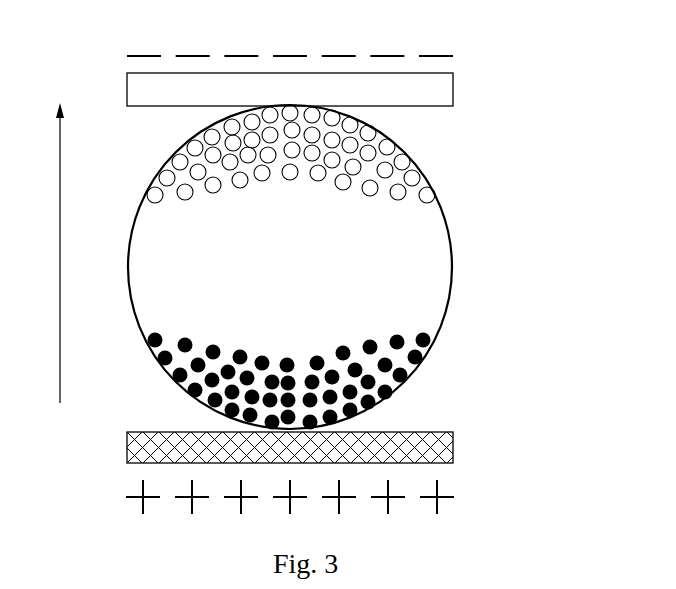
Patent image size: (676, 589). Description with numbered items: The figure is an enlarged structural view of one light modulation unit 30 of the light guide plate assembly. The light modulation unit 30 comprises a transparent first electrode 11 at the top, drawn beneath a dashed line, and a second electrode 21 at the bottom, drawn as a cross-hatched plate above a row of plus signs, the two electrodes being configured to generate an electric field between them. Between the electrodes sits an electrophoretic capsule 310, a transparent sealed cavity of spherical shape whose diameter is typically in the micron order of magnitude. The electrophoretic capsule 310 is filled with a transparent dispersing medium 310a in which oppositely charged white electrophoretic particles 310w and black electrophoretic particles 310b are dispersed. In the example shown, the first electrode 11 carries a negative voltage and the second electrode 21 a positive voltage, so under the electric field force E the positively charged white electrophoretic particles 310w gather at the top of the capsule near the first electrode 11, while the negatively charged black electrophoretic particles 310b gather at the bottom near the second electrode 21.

The light modulation unit 30 is at (55, 32).
The first electrode 11 is at (436, 89).
The second electrode 21 is at (437, 447).
The electrophoretic capsule 310 is at (534, 153).
The transparent dispersing medium 310a is at (436, 268).
The white electrophoretic particles 310w is at (399, 158).
The black electrophoretic particles 310b is at (409, 374).